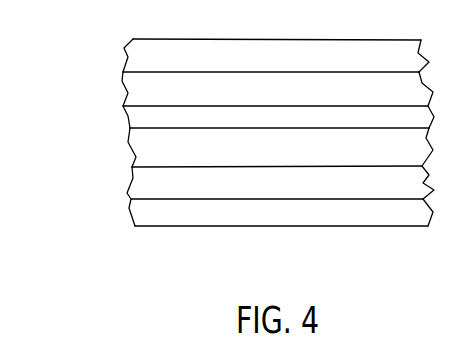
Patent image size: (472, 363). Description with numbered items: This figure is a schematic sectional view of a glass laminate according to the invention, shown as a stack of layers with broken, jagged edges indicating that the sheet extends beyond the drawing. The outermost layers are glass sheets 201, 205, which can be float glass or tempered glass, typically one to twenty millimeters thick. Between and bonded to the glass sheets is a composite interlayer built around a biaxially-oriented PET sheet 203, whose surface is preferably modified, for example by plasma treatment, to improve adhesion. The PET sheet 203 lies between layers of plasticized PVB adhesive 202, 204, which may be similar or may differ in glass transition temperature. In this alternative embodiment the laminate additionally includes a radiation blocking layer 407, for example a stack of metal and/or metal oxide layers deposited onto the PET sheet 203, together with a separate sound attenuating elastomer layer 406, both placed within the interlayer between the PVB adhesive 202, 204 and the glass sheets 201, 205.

The glass sheet 201 is at (237, 45).
The plasticized PVB adhesive layer 202 is at (240, 83).
The PET sheet 203 is at (242, 109).
The radiation blocking layer 407 is at (245, 147).
The sound attenuating elastomer layer 406 is at (246, 182).
The plasticized PVB adhesive layer 204 is at (245, 211).
The glass sheet 205 is at (281, 246).